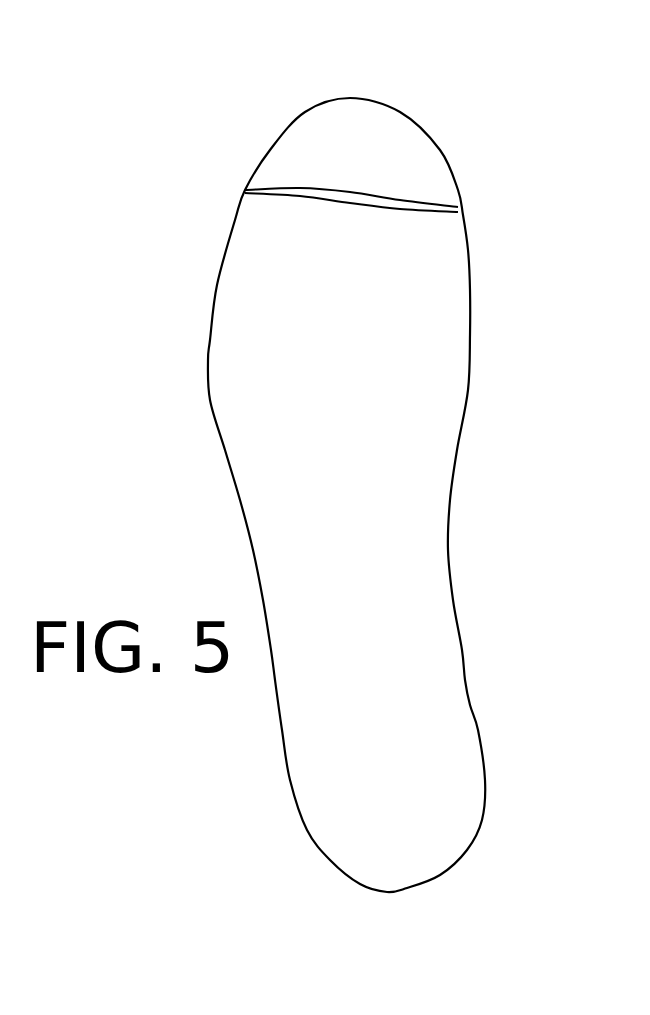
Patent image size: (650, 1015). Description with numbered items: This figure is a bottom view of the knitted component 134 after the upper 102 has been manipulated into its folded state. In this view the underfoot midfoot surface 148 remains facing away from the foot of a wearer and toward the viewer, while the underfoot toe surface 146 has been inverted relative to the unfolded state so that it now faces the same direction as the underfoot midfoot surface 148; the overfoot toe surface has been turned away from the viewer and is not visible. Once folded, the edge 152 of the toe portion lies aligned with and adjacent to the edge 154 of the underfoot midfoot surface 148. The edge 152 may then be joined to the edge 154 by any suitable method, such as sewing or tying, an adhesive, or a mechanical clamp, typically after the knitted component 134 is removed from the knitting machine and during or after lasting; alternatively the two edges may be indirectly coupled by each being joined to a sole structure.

The upper 102 is at (430, 55).
The knitted component 134 is at (362, 474).
The underfoot toe surface 146 is at (322, 134).
The underfoot midfoot surface 148 is at (274, 318).
The edge of the toe portion 152 is at (403, 200).
The edge of the underfoot midfoot surface 154 is at (420, 213).